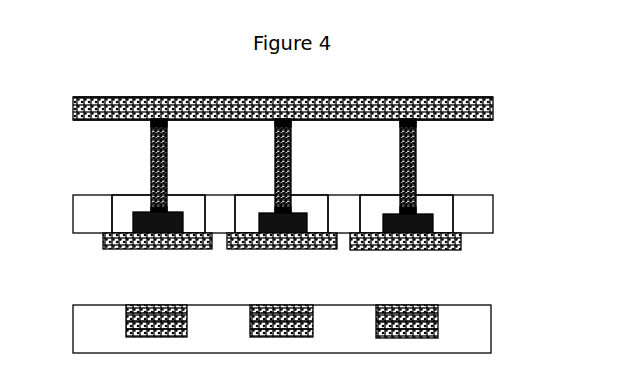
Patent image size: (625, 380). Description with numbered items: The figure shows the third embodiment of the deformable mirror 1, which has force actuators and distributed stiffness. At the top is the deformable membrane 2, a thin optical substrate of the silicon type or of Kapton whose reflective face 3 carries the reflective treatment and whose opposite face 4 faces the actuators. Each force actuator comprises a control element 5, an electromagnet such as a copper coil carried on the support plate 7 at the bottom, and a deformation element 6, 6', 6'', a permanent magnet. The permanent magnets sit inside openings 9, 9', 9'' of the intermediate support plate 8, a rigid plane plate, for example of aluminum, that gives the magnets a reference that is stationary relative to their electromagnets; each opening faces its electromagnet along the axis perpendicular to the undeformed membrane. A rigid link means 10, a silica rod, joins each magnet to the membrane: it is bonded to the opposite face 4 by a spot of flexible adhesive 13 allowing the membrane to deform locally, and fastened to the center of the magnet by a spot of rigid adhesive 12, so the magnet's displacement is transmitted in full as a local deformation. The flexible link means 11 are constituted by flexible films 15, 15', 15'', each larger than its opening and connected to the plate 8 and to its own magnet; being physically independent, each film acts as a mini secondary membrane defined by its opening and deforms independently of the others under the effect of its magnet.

The deformable mirror 1 is at (385, 83).
The deformable membrane 2 is at (488, 111).
The reflective face 3 is at (463, 99).
The opposite face 4 is at (463, 121).
The control element 5 is at (157, 313).
The deformation element 6 is at (150, 245).
The deformation element 6' is at (283, 246).
The deformation element 6'' is at (408, 246).
The support plate 7 is at (484, 340).
The intermediate support plate 8 is at (486, 217).
The opening 9 is at (112, 197).
The opening 9' is at (267, 198).
The opening 9'' is at (388, 198).
The rigid link means 10 is at (150, 152).
The flexible link means 11 is at (470, 244).
The spot of rigid adhesive 12 is at (160, 233).
The spot of flexible adhesive 13 is at (158, 121).
The flexible film 15 is at (175, 256).
The flexible film 15' is at (303, 256).
The flexible film 15'' is at (428, 256).